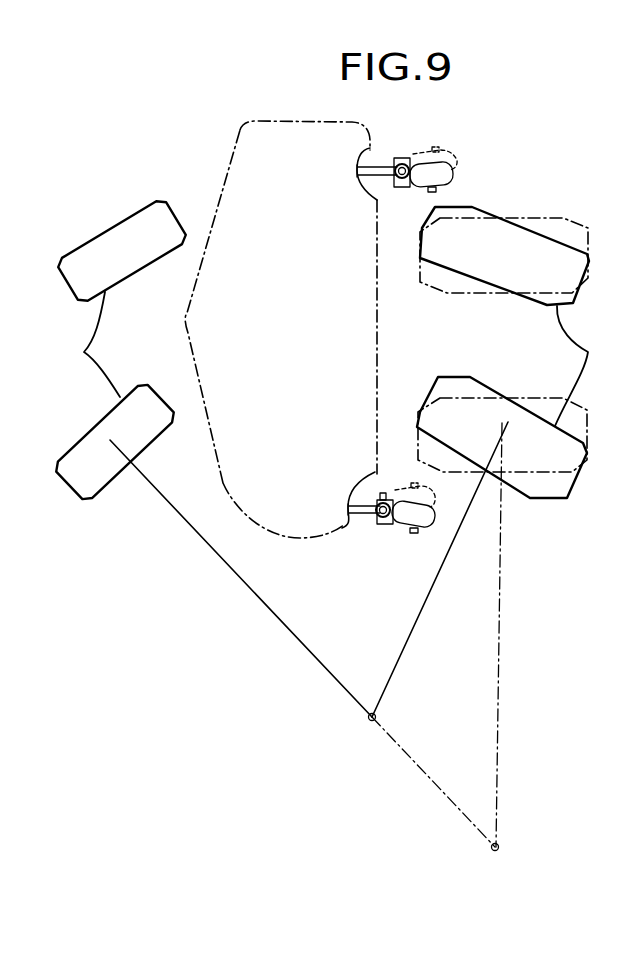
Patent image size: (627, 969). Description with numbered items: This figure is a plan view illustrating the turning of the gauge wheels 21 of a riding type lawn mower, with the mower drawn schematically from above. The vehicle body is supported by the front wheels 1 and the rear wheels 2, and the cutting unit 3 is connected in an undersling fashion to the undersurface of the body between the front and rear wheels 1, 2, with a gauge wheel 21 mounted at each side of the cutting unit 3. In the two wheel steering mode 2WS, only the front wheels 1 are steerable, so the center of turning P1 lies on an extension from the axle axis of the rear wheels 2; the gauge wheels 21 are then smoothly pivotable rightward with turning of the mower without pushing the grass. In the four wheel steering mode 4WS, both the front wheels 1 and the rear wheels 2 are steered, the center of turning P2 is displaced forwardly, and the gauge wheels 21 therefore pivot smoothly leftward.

The front wheels 1 is at (84, 353).
The rear wheels 2 is at (512, 352).
The cutting unit 3 is at (393, 342).
The gauge wheel 21 is at (413, 153).
The four wheel steering mode 4WS is at (410, 710).
The two wheel steering mode 2WS is at (535, 847).
The center of turning P1 is at (499, 840).
The center of turning P2 is at (369, 705).